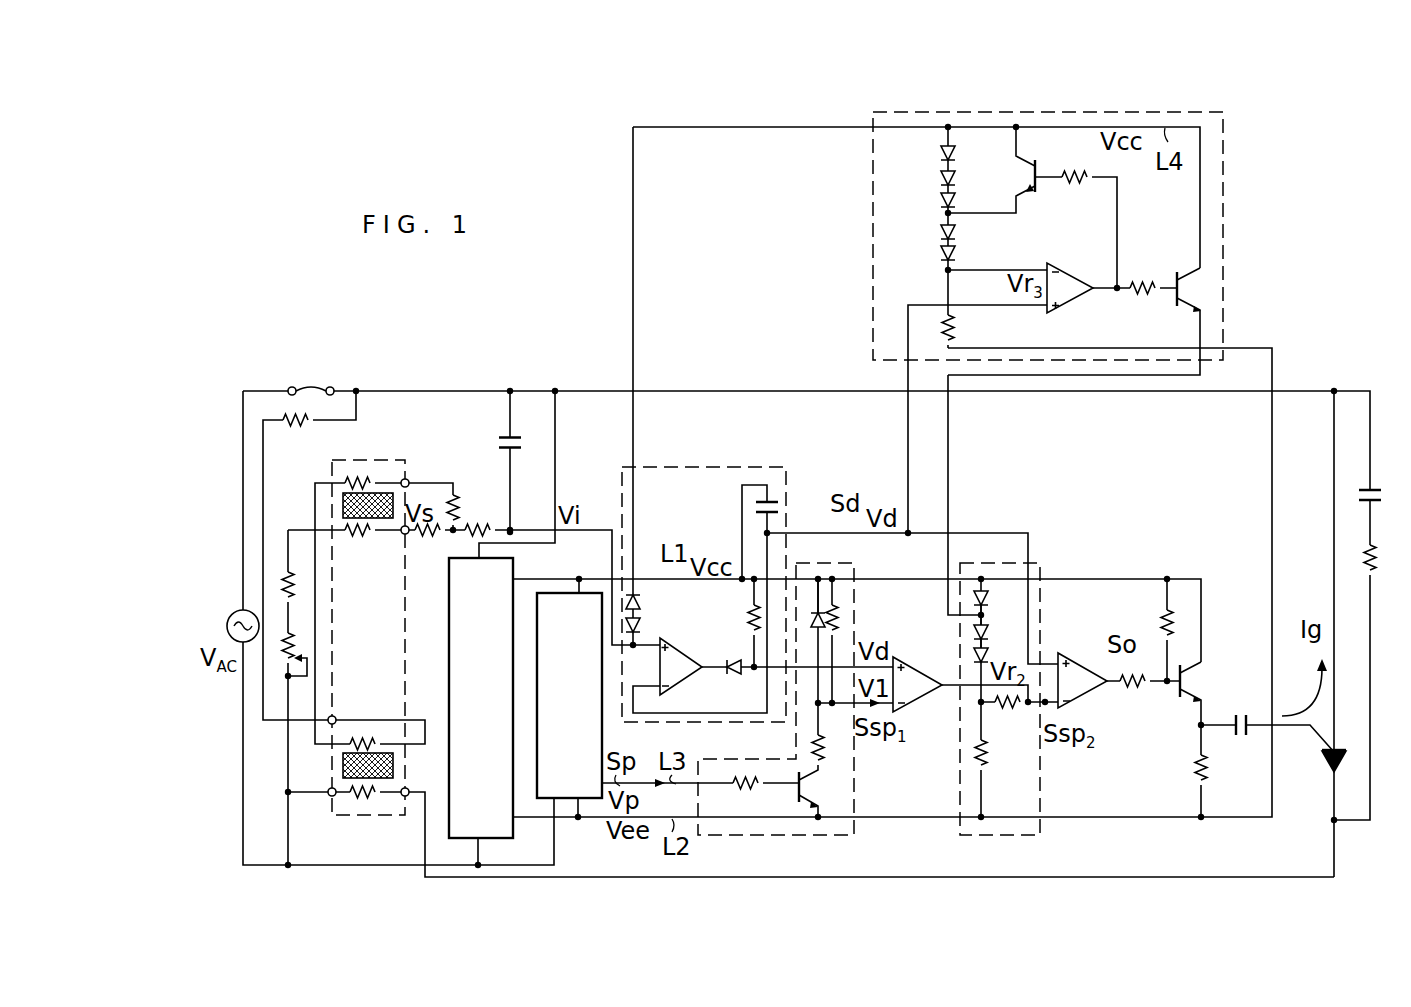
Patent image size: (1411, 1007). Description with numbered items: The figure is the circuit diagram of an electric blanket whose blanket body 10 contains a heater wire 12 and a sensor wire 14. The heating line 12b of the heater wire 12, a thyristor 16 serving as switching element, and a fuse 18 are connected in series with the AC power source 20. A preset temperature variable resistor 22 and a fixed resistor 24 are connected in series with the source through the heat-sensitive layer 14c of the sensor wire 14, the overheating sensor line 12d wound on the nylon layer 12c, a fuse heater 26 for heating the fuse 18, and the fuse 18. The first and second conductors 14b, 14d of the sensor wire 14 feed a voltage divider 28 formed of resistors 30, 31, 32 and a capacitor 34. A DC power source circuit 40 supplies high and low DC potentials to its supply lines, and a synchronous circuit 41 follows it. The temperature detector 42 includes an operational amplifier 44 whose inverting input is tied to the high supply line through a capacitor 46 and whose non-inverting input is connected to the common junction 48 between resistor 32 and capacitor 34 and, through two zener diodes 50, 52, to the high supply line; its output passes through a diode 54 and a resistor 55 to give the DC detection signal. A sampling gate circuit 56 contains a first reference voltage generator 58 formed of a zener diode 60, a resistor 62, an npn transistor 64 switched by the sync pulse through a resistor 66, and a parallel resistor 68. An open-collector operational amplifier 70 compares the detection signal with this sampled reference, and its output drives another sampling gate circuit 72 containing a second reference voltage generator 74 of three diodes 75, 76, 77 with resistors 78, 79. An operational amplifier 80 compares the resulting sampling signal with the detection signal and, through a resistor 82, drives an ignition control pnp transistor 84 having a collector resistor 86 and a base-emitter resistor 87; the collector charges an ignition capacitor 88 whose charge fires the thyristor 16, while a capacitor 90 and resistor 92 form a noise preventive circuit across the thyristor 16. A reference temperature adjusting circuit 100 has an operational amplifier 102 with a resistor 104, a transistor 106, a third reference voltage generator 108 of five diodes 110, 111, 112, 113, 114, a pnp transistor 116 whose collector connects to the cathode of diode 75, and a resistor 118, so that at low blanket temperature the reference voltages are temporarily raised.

The blanket body 10 is at (409, 623).
The heater wire 12 is at (357, 773).
The heating line 12b is at (355, 797).
The nylon layer 12c is at (343, 770).
The overheating sensor line 12d is at (360, 740).
The sensor wire 14 is at (365, 493).
The first conductor 14b is at (365, 533).
The heat-sensitive layer 14c is at (343, 508).
The second conductor 14d is at (383, 482).
The thyristor 16 is at (1316, 762).
The fuse 18 is at (316, 384).
The AC power source 20 is at (230, 610).
The preset temperature variable resistor 22 is at (300, 639).
The fixed resistor 24 is at (300, 586).
The fuse heater 26 is at (295, 426).
The voltage divider 28 is at (488, 463).
The resistor 30 is at (431, 534).
The resistor 31 is at (458, 500).
The resistor 32 is at (480, 528).
The capacitor 34 is at (490, 444).
The DC power source circuit 40 is at (449, 636).
The synchronous circuit 41 is at (568, 800).
The temperature detector 42 is at (714, 467).
The operational amplifier 44 is at (702, 660).
The capacitor 46 is at (778, 498).
The common junction 48 is at (512, 530).
The zener diode 50 is at (640, 602).
The zener diode 52 is at (640, 625).
The diode 54 is at (735, 676).
The resistor 55 is at (751, 626).
The sampling gate circuit 56 is at (856, 569).
The first reference voltage generator 58 is at (826, 628).
The zener diode 60 is at (814, 610).
The resistor 62 is at (824, 744).
The npn transistor 64 is at (816, 787).
The resistor 66 is at (746, 788).
The resistor 68 is at (836, 618).
The operational amplifier 70 is at (924, 696).
The sampling gate circuit 72 is at (1038, 568).
The second reference voltage generator 74 is at (972, 630).
The diode 75 is at (974, 598).
The diode 76 is at (988, 632).
The diode 77 is at (986, 658).
The resistor 78 is at (984, 754).
The resistor 79 is at (1010, 708).
The operational amplifier 80 is at (1076, 662).
The resistor 82 is at (1132, 688).
The ignition control pnp transistor 84 is at (1188, 675).
The resistor 86 is at (1208, 765).
The resistor 87 is at (1162, 624).
The ignition capacitor 88 is at (1242, 714).
The capacitor 90 is at (1376, 490).
The resistor 92 is at (1374, 574).
The reference temperature adjusting circuit 100 is at (872, 268).
The operational amplifier 102 is at (1073, 268).
The resistor 104 is at (956, 329).
The transistor 106 is at (1042, 177).
The third reference voltage generator 108 is at (925, 205).
The diode 110 is at (956, 155).
The diode 111 is at (940, 180).
The diode 112 is at (956, 202).
The diode 113 is at (956, 232).
The diode 114 is at (984, 256).
The pnp transistor 116 is at (1180, 302).
The resistor 118 is at (1142, 282).